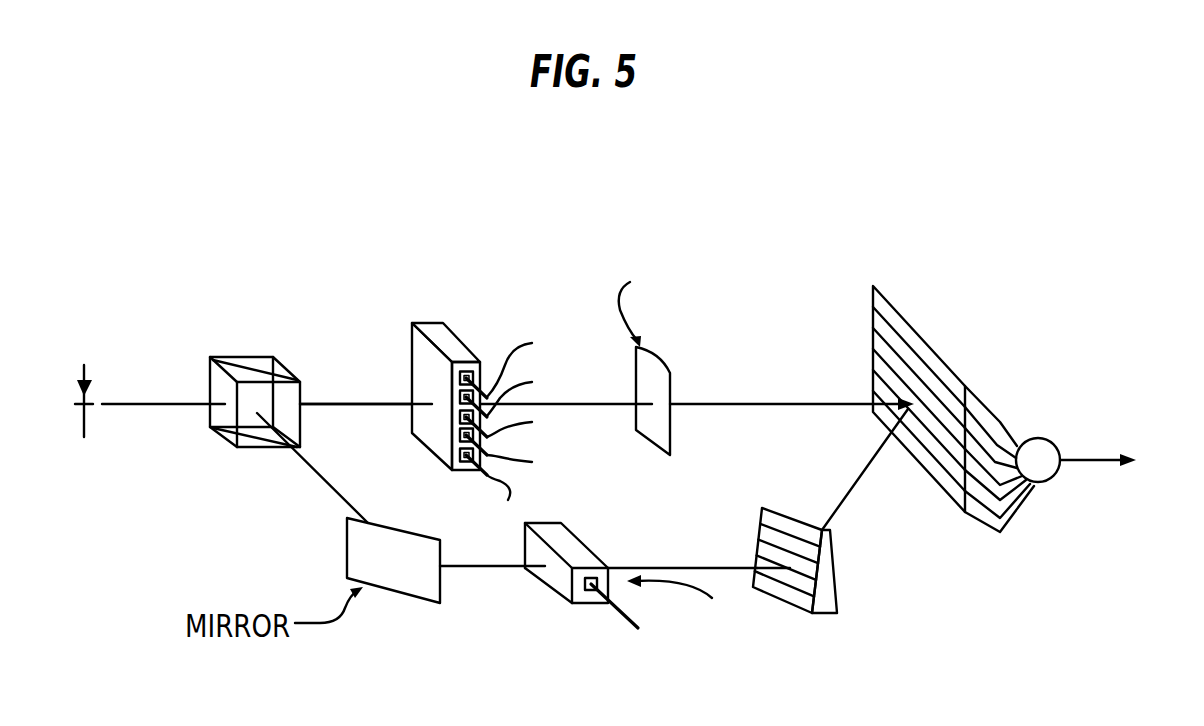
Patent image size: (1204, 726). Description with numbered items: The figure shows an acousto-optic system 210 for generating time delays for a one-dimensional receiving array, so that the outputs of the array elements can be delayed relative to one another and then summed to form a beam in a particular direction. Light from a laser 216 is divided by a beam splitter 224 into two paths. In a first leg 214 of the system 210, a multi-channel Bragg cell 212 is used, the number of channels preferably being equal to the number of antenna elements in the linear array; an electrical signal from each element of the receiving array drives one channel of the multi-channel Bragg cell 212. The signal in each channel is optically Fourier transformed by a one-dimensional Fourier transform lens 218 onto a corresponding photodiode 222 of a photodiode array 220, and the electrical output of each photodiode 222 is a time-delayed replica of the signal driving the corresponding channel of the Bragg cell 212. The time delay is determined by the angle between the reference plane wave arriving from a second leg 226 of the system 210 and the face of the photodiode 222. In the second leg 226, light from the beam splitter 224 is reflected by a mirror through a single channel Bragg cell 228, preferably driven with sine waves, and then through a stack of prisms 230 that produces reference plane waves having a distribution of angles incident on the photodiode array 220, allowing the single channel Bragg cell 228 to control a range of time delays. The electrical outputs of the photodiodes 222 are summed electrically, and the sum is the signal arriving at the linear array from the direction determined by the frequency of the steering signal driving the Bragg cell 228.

The acousto-optic system 210 is at (246, 222).
The multi-channel Bragg cell 212 is at (415, 345).
The first leg 214 is at (320, 403).
The laser 216 is at (83, 378).
The one-dimensional Fourier transform lens 218 is at (656, 356).
The photodiode array 220 is at (850, 315).
The photodiode 222 is at (928, 347).
The beam splitter 224 is at (211, 443).
The second leg 226 is at (322, 482).
The single channel Bragg cell 228 is at (583, 548).
The stack of prisms 230 is at (792, 615).